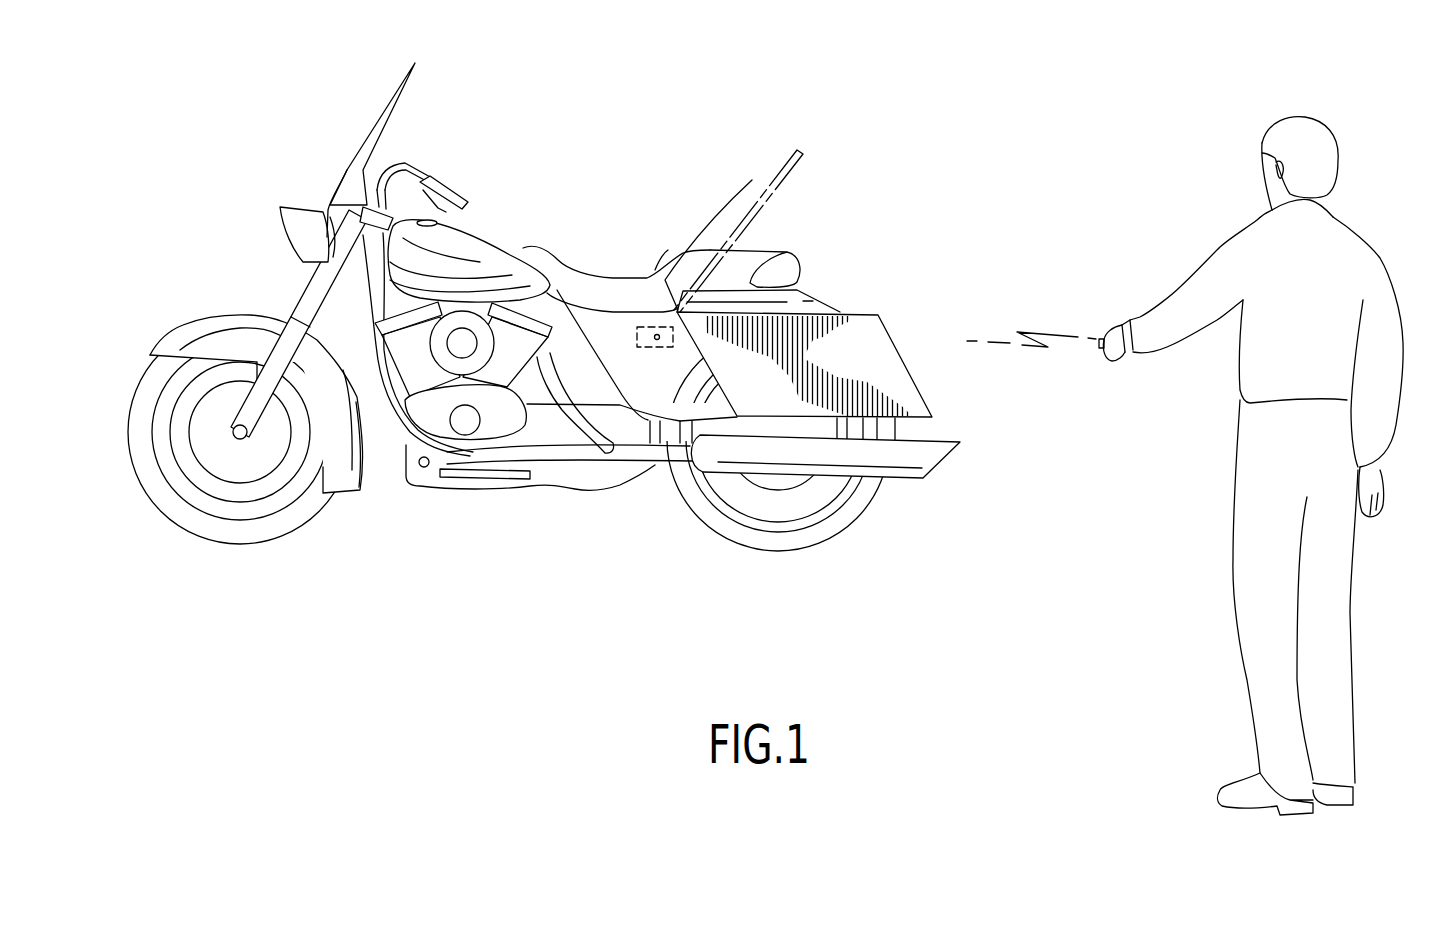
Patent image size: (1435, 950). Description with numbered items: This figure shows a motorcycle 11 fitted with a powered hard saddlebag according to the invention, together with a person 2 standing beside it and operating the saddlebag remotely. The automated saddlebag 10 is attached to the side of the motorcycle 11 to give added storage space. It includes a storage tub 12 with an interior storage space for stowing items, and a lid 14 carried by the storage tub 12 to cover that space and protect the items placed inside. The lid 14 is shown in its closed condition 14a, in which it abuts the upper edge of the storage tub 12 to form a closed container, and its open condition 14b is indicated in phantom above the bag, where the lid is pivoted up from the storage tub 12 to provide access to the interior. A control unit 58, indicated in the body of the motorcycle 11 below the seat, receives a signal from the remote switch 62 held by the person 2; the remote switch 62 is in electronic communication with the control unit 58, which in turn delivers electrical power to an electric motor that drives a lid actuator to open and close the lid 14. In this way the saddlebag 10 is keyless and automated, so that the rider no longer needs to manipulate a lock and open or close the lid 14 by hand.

The person 2 is at (1354, 243).
The automated saddlebag 10 is at (923, 273).
The motorcycle 11 is at (490, 248).
The storage tub 12 is at (897, 353).
The lid 14 is at (750, 290).
The closed condition 14a is at (847, 299).
The open condition 14b is at (761, 174).
The control unit 58 is at (638, 323).
The remote switch 62 is at (1102, 338).